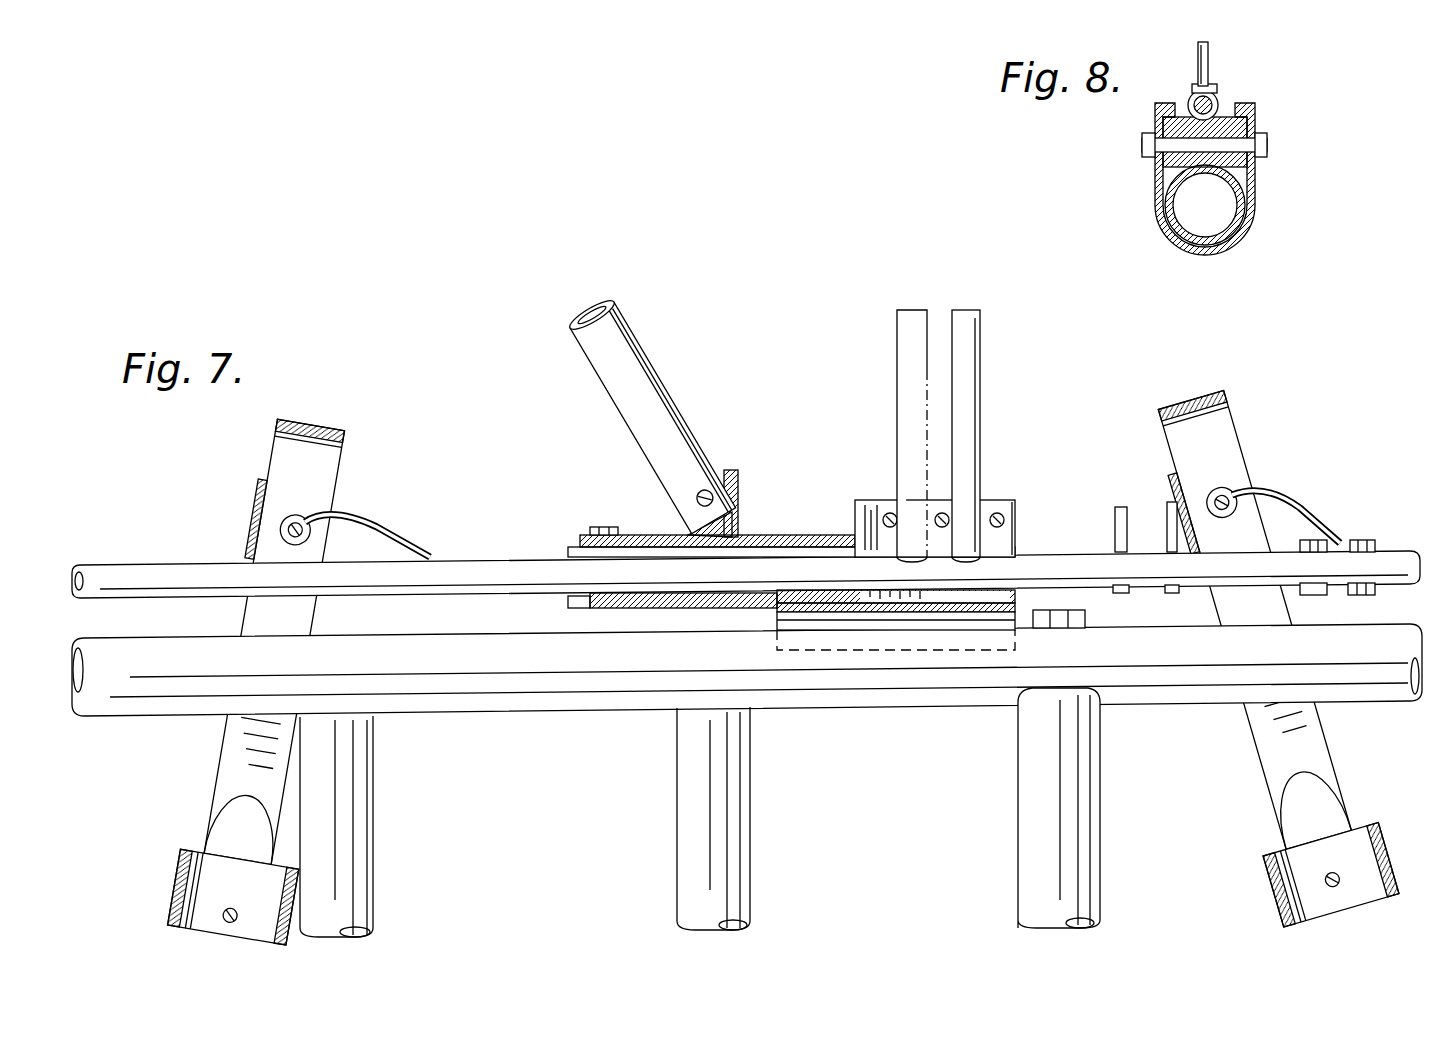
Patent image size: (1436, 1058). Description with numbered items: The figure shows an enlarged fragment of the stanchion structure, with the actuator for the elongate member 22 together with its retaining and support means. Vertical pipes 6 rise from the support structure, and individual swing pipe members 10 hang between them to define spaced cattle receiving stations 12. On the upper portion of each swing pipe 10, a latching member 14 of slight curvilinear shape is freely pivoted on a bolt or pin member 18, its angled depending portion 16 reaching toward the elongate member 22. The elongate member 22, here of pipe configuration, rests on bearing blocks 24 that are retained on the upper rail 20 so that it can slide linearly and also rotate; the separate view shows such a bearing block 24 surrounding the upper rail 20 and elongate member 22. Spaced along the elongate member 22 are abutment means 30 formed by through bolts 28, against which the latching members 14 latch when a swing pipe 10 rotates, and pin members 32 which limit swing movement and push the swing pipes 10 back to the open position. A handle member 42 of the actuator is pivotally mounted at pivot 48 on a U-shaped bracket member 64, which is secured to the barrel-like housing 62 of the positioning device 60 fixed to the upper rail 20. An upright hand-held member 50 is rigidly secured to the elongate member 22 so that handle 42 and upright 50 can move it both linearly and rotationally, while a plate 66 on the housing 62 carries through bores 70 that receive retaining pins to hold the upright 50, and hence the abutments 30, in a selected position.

In FIG. 7, the vertical pipe 6 is at (372, 882).
In FIG. 7, the swing pipe member 10 is at (178, 868).
In FIG. 7, the cattle receiving station 12 is at (751, 668).
In FIG. 7, the latching member 14 is at (348, 440).
In FIG. 7, the depending portion 16 is at (400, 535).
In FIG. 7, the bolt or pin member 18 is at (306, 522).
In FIG. 7, the upper rail 20 is at (525, 690).
In FIG. 8, the upper rail 20 is at (1225, 212).
In FIG. 7, the elongate member 22 is at (540, 560).
In FIG. 8, the elongate member 22 is at (1218, 100).
In FIG. 8, the bearing block 24 is at (1258, 118).
In FIG. 7, the through bolt 28 is at (1365, 594).
In FIG. 7, the abutment means 30 is at (1340, 522).
In FIG. 8, the abutment means 30 is at (1225, 76).
In FIG. 7, the pin member 32 is at (1167, 530).
In FIG. 8, the pin member 32 is at (1210, 55).
In FIG. 7, the handle member 42 is at (650, 415).
In FIG. 7, the pivot 48 is at (705, 498).
In FIG. 7, the upright hand-held member 50 is at (905, 355).
In FIG. 7, the positioning device 60 is at (914, 501).
In FIG. 7, the barrel-like housing 62 is at (810, 535).
In FIG. 7, the U-shaped bracket member 64 is at (728, 470).
In FIG. 7, the plate 66 is at (1010, 545).
In FIG. 7, the through bore 70 is at (889, 512).